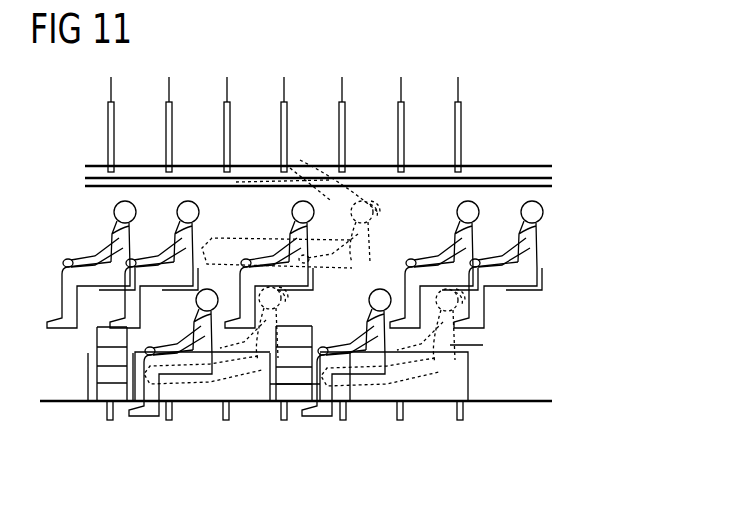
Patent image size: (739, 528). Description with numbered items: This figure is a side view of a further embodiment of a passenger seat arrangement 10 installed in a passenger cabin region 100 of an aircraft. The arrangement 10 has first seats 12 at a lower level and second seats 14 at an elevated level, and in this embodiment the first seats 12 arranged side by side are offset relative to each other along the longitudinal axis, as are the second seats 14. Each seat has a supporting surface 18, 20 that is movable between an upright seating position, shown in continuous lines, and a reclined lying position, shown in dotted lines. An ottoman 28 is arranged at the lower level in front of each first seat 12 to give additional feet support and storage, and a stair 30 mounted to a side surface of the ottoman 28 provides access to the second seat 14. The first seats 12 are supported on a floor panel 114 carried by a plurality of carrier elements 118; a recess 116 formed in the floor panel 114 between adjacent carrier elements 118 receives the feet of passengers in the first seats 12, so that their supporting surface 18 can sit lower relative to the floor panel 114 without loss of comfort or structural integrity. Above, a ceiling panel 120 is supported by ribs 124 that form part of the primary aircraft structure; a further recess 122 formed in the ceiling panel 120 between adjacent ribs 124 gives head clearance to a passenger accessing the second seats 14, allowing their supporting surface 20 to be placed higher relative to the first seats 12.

The passenger cabin region 100 is at (347, 128).
The passenger seat arrangement 10 is at (318, 220).
The first seat 12 is at (306, 356).
The second seat 14 is at (303, 197).
The supporting surface 18 is at (413, 393).
The supporting surface 20 is at (353, 397).
The ottoman 28 is at (298, 373).
The stair 30 is at (273, 405).
The floor panel 114 is at (495, 403).
The recess 116 is at (370, 397).
The carrier element 118 is at (340, 405).
The ceiling panel 120 is at (373, 172).
The further recess 122 is at (320, 162).
The rib 124 is at (342, 88).